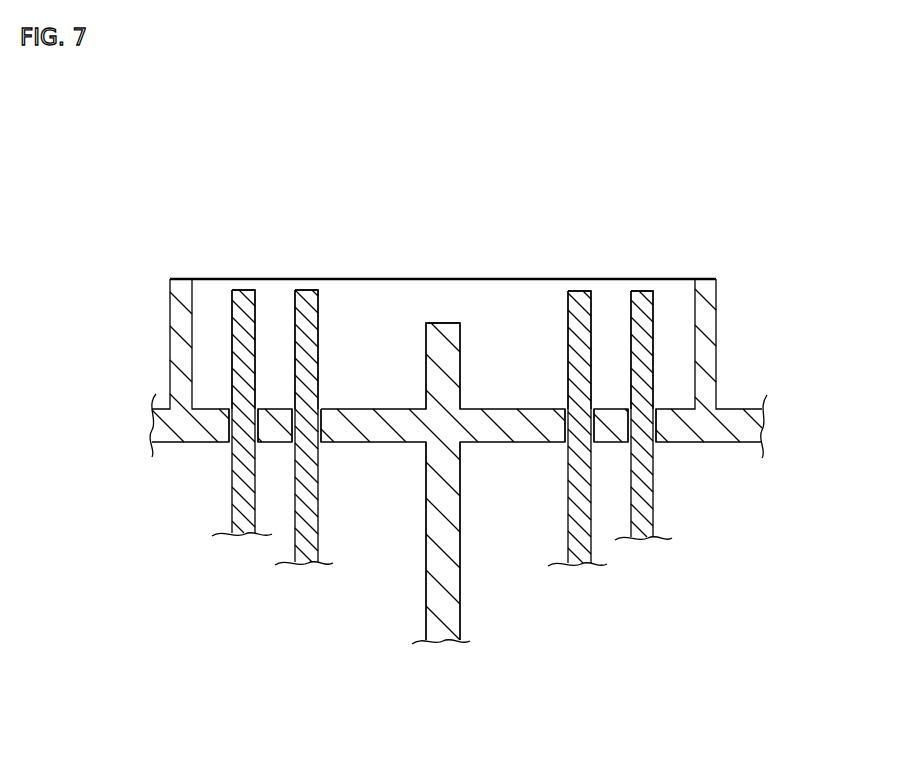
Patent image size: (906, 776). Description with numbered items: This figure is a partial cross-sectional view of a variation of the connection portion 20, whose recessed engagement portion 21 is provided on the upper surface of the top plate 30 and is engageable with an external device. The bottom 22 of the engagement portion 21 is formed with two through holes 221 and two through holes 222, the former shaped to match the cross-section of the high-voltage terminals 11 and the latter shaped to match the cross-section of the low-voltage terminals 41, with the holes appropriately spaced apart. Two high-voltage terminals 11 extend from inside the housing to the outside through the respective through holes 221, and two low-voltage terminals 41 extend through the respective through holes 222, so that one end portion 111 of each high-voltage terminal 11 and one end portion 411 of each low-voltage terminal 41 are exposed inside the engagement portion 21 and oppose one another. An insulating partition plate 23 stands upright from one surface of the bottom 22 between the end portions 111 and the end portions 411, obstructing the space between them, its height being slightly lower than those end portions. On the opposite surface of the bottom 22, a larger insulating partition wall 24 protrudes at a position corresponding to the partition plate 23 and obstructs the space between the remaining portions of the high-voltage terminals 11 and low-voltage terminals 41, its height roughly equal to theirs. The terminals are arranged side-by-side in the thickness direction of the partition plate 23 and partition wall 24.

The connection portion 20 is at (535, 153).
The engagement portion 21 is at (707, 297).
The bottom 22 is at (207, 408).
The partition plate 23 is at (443, 323).
The partition wall 24 is at (433, 643).
The top plate 30 is at (738, 415).
The high-voltage terminal 11 is at (245, 536).
The end portion of the high-voltage terminal 111 is at (243, 290).
The low-voltage terminal 41 is at (580, 567).
The end portion of the low-voltage terminal 411 is at (580, 291).
The through hole 221 is at (326, 395).
The through hole 222 is at (560, 393).